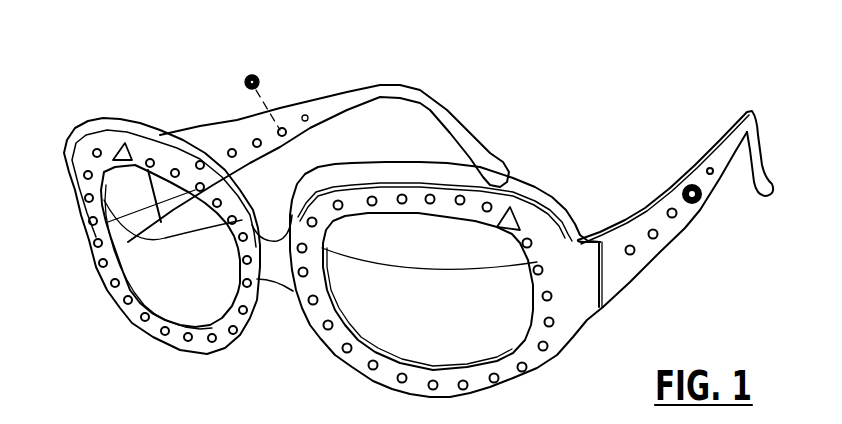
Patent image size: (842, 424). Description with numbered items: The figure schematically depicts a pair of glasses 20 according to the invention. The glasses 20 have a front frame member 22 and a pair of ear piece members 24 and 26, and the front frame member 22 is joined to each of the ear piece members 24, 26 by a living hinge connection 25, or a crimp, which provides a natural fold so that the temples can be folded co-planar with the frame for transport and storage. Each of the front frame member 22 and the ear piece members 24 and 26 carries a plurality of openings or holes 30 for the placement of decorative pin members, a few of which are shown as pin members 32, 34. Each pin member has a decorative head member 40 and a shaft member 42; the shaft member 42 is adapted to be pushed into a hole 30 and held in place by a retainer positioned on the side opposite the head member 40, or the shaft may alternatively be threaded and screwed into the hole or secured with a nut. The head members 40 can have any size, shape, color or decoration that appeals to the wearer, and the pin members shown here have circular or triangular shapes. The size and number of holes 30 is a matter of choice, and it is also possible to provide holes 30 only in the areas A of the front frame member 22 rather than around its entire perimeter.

The glasses 20 is at (125, 340).
The front frame member 22 is at (333, 340).
The ear piece member 24 is at (304, 115).
The living hinge connection 25 is at (160, 225).
The ear piece member 26 is at (720, 150).
The openings or holes 30 is at (232, 149).
The decorative pin member 32 is at (250, 72).
The decorative pin member 34 is at (142, 146).
The decorative head member 40 is at (246, 77).
The shaft member 42 is at (259, 78).
The areas A is at (90, 125).